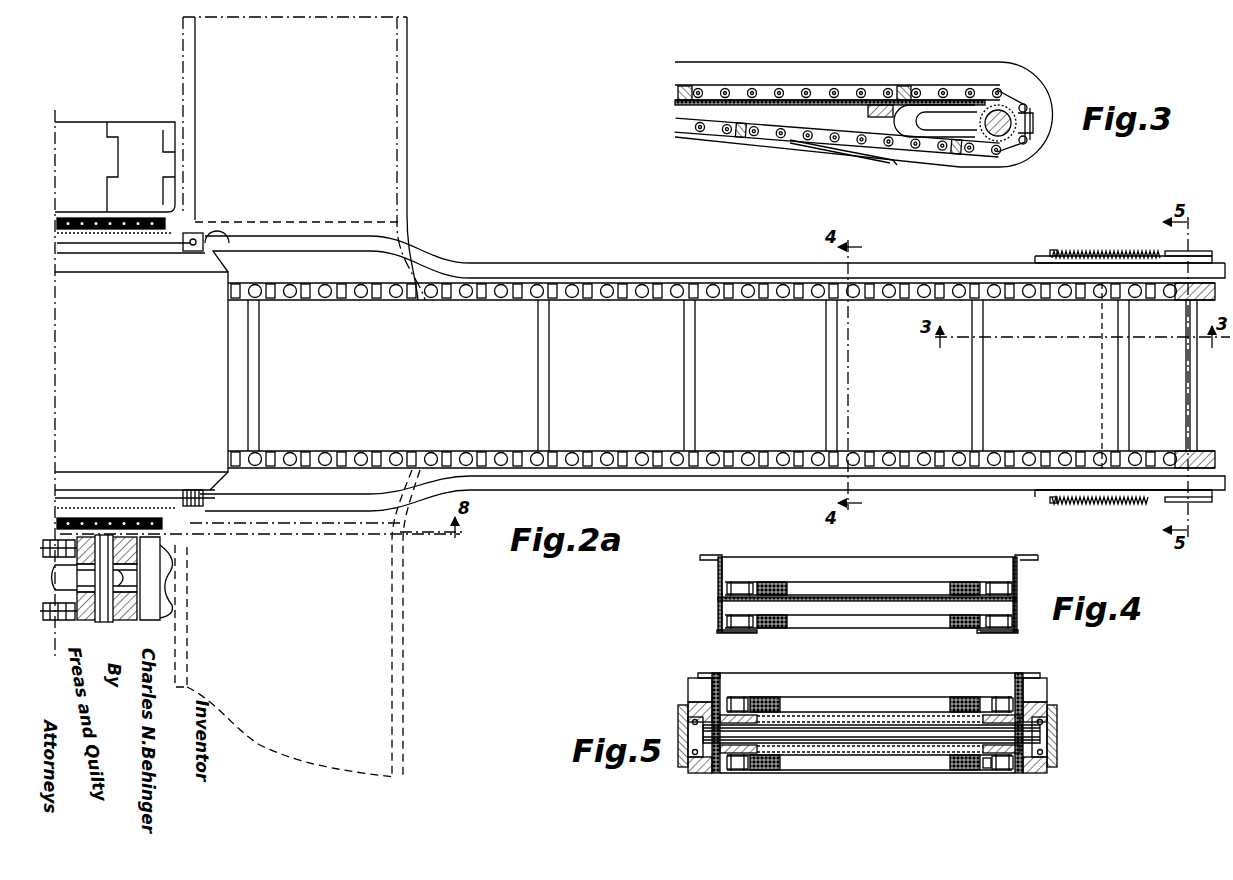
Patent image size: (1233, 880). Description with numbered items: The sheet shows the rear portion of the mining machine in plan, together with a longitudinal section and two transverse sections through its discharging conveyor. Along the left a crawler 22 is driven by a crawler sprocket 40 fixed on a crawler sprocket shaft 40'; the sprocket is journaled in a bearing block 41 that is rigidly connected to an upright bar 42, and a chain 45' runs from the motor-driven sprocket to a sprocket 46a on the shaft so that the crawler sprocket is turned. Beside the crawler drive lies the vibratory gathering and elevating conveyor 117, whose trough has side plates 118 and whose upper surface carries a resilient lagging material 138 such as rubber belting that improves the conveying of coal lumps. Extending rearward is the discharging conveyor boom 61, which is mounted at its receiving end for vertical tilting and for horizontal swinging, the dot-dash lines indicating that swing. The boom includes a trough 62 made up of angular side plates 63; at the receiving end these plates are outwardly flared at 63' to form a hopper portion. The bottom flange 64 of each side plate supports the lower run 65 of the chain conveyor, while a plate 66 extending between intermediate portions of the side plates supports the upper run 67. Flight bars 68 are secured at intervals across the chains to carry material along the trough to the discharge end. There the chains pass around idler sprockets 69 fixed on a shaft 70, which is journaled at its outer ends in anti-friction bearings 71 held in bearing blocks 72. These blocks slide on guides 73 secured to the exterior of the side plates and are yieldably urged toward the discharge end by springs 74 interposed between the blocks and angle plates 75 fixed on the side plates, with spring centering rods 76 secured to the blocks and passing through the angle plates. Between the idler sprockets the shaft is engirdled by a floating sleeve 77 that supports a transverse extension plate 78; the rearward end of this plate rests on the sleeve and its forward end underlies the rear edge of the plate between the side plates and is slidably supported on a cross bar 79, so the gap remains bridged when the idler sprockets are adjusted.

In FIG. 2A, the crawler 22 is at (178, 160).
In FIG. 2A, the crawler sprocket 40 is at (155, 578).
In FIG. 2A, the crawler sprocket shaft 40' is at (84, 604).
In FIG. 2A, the bearing block 41 is at (140, 553).
In FIG. 2A, the upright bar 42 is at (50, 622).
In FIG. 2A, the chain 45' is at (135, 375).
In FIG. 2A, the sprocket 46a is at (100, 218).
In FIG. 2A, the discharging conveyor boom 61 is at (598, 270).
In FIG. 2A, the trough 62 is at (538, 263).
In FIG. 2A, the angular side plate 63 is at (847, 371).
In FIG. 4, the angular side plate 63 is at (864, 593).
In FIG. 5, the angular side plate 63 is at (869, 722).
In FIG. 2A, the outwardly flared side plate portion 63' is at (335, 370).
In FIG. 3, the bottom flange 64 is at (848, 148).
In FIG. 4, the bottom flange 64 is at (726, 633).
In FIG. 3, the lower run of chain conveyor 65 is at (800, 140).
In FIG. 4, the lower run of chain conveyor 65 is at (722, 626).
In FIG. 5, the lower run of chain conveyor 65 is at (1010, 772).
In FIG. 2A, the plate 66 is at (574, 375).
In FIG. 3, the plate 66 is at (818, 100).
In FIG. 4, the plate 66 is at (865, 601).
In FIG. 2A, the upper run of conveyor chain 67 is at (760, 302).
In FIG. 3, the upper run of conveyor chain 67 is at (742, 86).
In FIG. 4, the upper run of conveyor chain 67 is at (742, 582).
In FIG. 5, the upper run of conveyor chain 67 is at (748, 700).
In FIG. 2A, the flight bar 68 is at (697, 382).
In FIG. 3, the flight bar 68 is at (902, 86).
In FIG. 4, the flight bar 68 is at (835, 580).
In FIG. 5, the flight bar 68 is at (894, 698).
In FIG. 2A, the idler sprocket 69 is at (1180, 303).
In FIG. 3, the idler sprocket 69 is at (985, 143).
In FIG. 5, the idler sprocket 69 is at (748, 770).
In FIG. 3, the shaft 70 is at (1008, 135).
In FIG. 5, the shaft 70 is at (908, 744).
In FIG. 5, the anti-friction bearing 71 is at (679, 720).
In FIG. 5, the bearing block 72 is at (690, 760).
In FIG. 5, the guide 73 is at (690, 708).
In FIG. 2A, the spring 74 is at (1096, 256).
In FIG. 2A, the angle plate 75 is at (1054, 256).
In FIG. 5, the angle plate 75 is at (688, 680).
In FIG. 2A, the spring centering rod 76 is at (1042, 497).
In FIG. 2A, the floating sleeve 77 is at (1188, 394).
In FIG. 3, the floating sleeve 77 is at (1008, 108).
In FIG. 5, the floating sleeve 77 is at (830, 724).
In FIG. 2A, the transverse extension plate 78 is at (1141, 375).
In FIG. 3, the transverse extension plate 78 is at (958, 100).
In FIG. 3, the cross bar 79 is at (868, 110).
In FIG. 2A, the vibratory gathering and elevating conveyor 117 is at (250, 372).
In FIG. 2A, the side plate 118 is at (158, 272).
In FIG. 2A, the resilient lagging material 138 is at (141, 372).